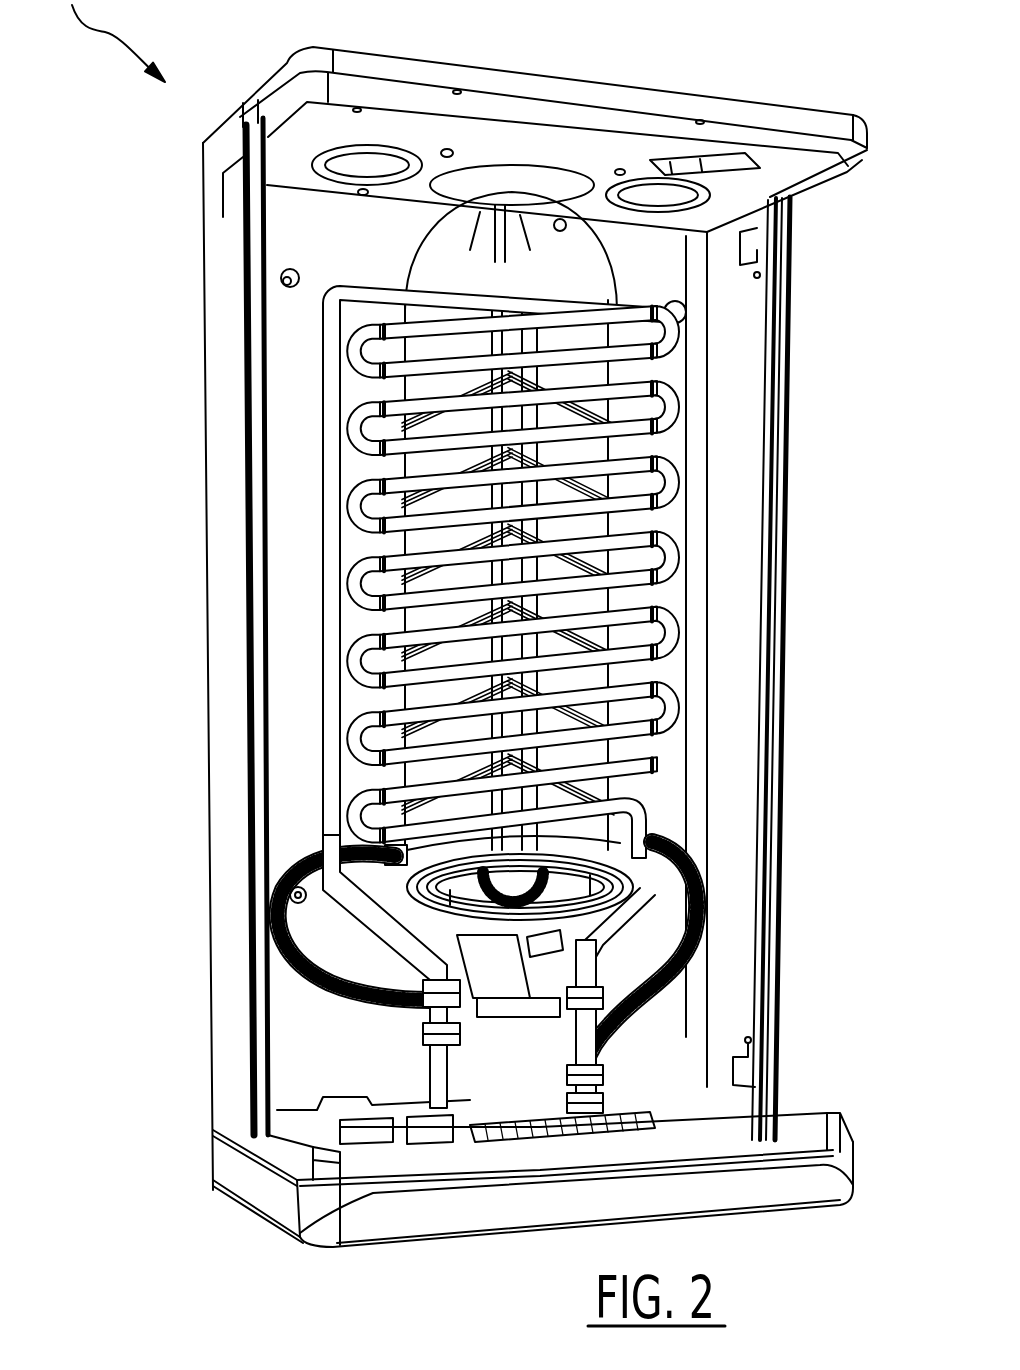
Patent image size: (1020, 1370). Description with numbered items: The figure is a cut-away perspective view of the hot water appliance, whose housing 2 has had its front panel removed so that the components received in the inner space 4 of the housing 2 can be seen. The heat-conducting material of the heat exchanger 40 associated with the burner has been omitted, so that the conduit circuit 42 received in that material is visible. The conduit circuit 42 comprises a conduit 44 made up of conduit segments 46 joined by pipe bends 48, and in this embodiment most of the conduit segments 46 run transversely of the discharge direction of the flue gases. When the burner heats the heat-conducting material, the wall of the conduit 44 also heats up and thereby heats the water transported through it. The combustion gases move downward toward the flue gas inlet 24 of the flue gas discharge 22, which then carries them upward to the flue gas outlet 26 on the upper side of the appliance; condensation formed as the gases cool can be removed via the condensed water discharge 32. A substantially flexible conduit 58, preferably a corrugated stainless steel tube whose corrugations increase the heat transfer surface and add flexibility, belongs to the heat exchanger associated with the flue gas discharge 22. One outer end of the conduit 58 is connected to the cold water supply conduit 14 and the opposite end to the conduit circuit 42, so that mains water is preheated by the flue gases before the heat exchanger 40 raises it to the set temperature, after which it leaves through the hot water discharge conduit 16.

The housing 2 is at (227, 335).
The inner space 4 is at (275, 432).
The water supply conduit 14 is at (580, 1087).
The water discharge conduit 16 is at (437, 1068).
The flue gas discharge 22 is at (597, 267).
The flue gas inlet 24 is at (603, 940).
The flue gas outlet 26 is at (527, 180).
The condensed water discharge 32 is at (490, 964).
The heat exchanger 40 is at (514, 572).
The conduit circuit 42 is at (670, 558).
The conduit 44 is at (333, 542).
The conduit segments 46 is at (620, 613).
The pipe bends 48 is at (355, 738).
The conduit 58 is at (683, 948).